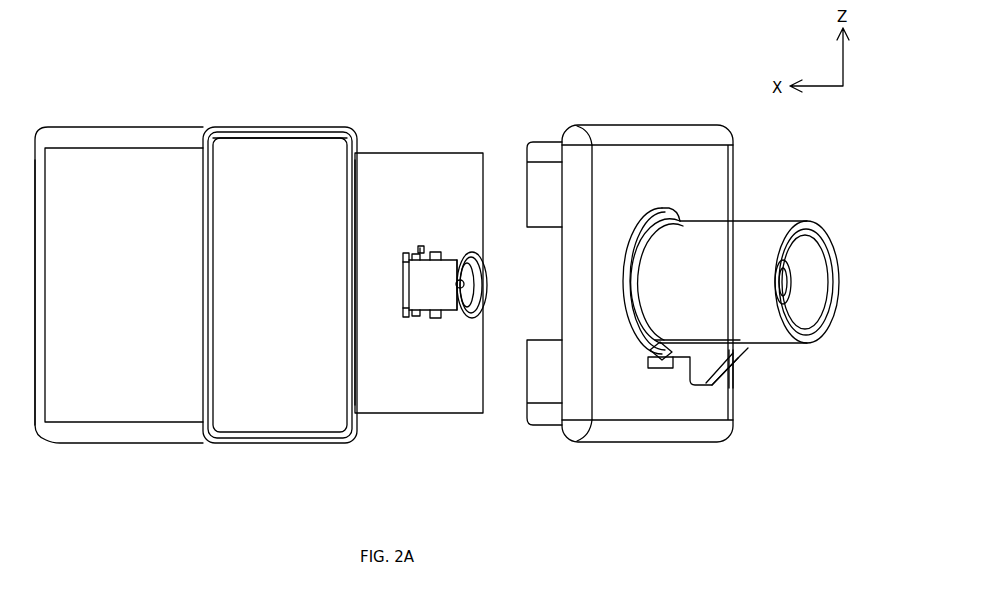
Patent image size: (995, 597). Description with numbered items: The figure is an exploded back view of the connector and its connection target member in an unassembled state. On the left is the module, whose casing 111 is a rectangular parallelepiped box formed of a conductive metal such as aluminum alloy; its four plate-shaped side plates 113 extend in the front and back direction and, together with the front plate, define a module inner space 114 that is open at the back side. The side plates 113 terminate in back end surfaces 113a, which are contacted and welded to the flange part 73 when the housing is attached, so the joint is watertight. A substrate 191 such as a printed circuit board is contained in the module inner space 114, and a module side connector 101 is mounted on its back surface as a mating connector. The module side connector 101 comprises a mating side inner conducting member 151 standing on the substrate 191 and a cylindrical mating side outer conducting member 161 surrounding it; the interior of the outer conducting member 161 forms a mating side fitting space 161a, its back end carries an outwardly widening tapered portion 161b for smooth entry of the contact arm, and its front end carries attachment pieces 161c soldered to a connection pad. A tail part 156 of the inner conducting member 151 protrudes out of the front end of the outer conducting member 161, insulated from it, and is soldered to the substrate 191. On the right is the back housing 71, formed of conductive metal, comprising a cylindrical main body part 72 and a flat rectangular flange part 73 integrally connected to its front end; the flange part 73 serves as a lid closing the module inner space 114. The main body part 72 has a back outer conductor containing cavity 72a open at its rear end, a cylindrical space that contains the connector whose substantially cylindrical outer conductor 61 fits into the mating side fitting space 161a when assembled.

The casing 111 is at (148, 127).
The side plates 113 is at (151, 405).
The back end surfaces 113a is at (327, 134).
The module inner space 114 is at (250, 165).
The substrate 191 is at (408, 153).
The module side connector 101 is at (455, 325).
The mating side outer conducting member 161 is at (445, 265).
The mating side fitting space 161a is at (478, 302).
The tapered portion 161b is at (472, 318).
The attachment pieces 161c is at (405, 313).
The tail part 156 is at (418, 246).
The mating side inner conducting member 151 is at (462, 284).
The flange part 73 is at (658, 153).
The back housing 71 is at (765, 221).
The main body part 72 is at (768, 348).
The back outer conductor containing cavity 72a is at (818, 291).
The outer conductor 61 is at (790, 268).